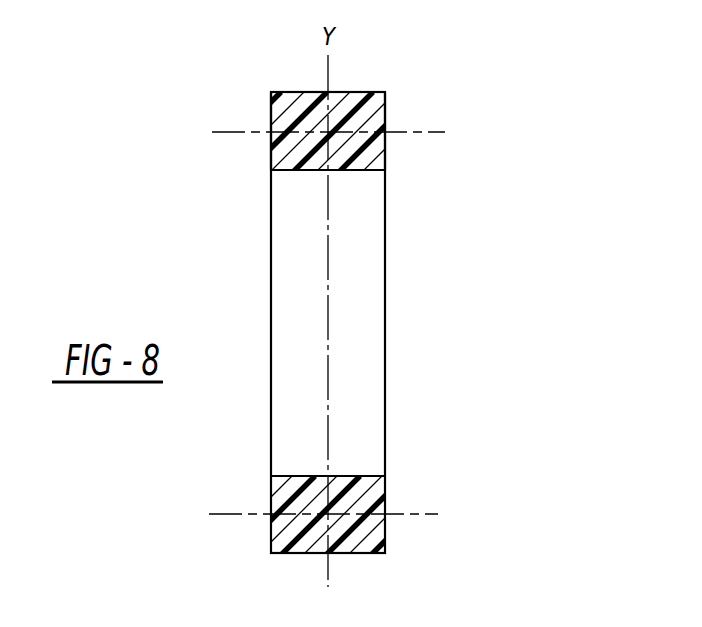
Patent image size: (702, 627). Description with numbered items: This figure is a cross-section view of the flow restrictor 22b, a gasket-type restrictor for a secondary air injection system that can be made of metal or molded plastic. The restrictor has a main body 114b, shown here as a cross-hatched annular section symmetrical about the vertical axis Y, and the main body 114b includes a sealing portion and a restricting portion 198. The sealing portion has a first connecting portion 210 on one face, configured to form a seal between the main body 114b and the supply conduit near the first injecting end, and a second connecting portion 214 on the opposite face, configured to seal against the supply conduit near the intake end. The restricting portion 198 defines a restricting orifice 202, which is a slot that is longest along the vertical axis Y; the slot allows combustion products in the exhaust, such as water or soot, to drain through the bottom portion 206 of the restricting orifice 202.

The flow restrictor 22b is at (235, 77).
The main body 114b is at (365, 92).
The second connecting portion 214 is at (386, 101).
The first connecting portion 210 is at (271, 113).
The restricting portion 198 is at (386, 150).
The restricting orifice 202 is at (362, 171).
The bottom portion 206 is at (348, 476).